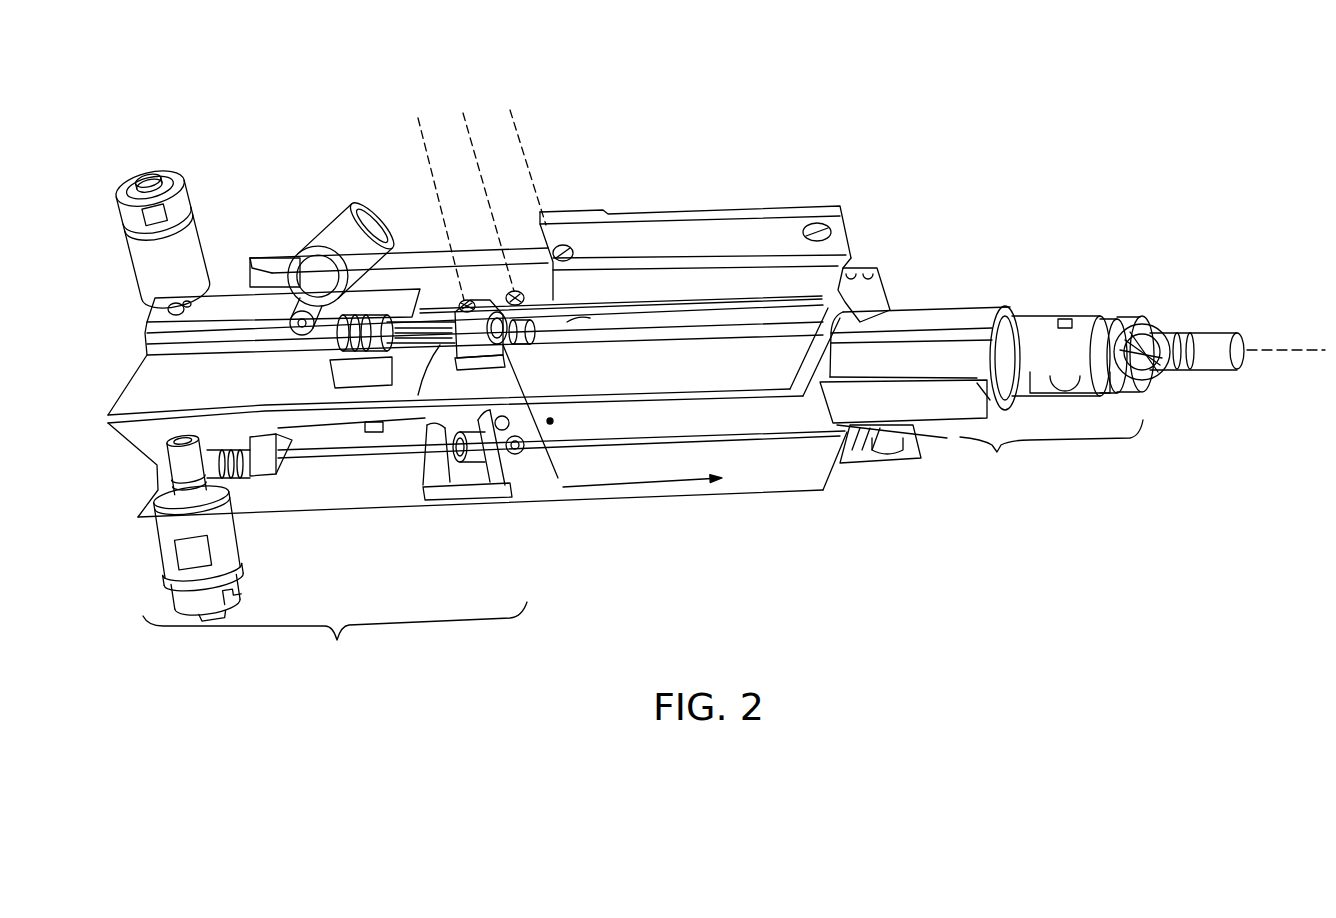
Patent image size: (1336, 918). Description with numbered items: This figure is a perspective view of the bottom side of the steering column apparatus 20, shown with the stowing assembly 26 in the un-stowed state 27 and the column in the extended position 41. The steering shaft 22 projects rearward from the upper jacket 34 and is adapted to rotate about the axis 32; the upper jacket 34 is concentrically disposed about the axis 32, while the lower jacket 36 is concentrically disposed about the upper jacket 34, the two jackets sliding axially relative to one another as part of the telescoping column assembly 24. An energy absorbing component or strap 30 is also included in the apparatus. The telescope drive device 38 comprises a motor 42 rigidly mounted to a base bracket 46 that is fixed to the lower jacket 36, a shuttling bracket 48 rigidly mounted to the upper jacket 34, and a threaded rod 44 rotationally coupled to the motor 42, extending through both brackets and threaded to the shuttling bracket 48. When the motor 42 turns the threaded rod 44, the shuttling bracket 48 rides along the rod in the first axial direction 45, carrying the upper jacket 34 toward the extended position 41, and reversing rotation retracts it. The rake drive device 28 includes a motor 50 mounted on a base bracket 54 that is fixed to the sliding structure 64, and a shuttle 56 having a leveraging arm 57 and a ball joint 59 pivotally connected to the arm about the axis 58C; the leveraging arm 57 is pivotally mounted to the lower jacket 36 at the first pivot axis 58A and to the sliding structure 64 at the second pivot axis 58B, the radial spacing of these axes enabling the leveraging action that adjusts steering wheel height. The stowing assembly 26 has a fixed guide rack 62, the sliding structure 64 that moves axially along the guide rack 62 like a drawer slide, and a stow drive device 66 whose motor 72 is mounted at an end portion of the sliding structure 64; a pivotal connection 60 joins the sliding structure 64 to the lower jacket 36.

The steering column apparatus 20 is at (1010, 174).
The steering shaft 22 is at (1210, 330).
The telescoping column assembly 24 is at (892, 487).
The stowing assembly 26 is at (897, 289).
The un-stowed state 27 is at (1159, 179).
The rake drive device 28 is at (402, 215).
The energy absorbing component or strap 30 is at (297, 435).
The axis 32 is at (1258, 345).
The upper jacket 34 is at (560, 478).
The lower jacket 36 is at (770, 497).
The telescope drive device 38 is at (335, 638).
The extended position 41 is at (1077, 179).
The motor 42 is at (240, 548).
The threaded rod 44 is at (380, 467).
The first axial direction 45 is at (667, 483).
The base bracket 46 is at (290, 480).
The shuttling bracket 48 is at (477, 497).
The motor 50 is at (342, 237).
The base bracket 54 is at (559, 442).
The shuttle 56 is at (489, 385).
The leveraging arm 57 is at (550, 425).
The first pivot axis 58A is at (540, 176).
The second pivot axis 58B is at (473, 143).
The axis 58C is at (425, 158).
The ball joint 59 is at (453, 365).
The pivotal connection 60 is at (540, 285).
The guide rack 62 is at (773, 207).
The sliding structure 64 is at (147, 312).
The stow drive device 66 is at (208, 186).
The motor 72 is at (207, 240).